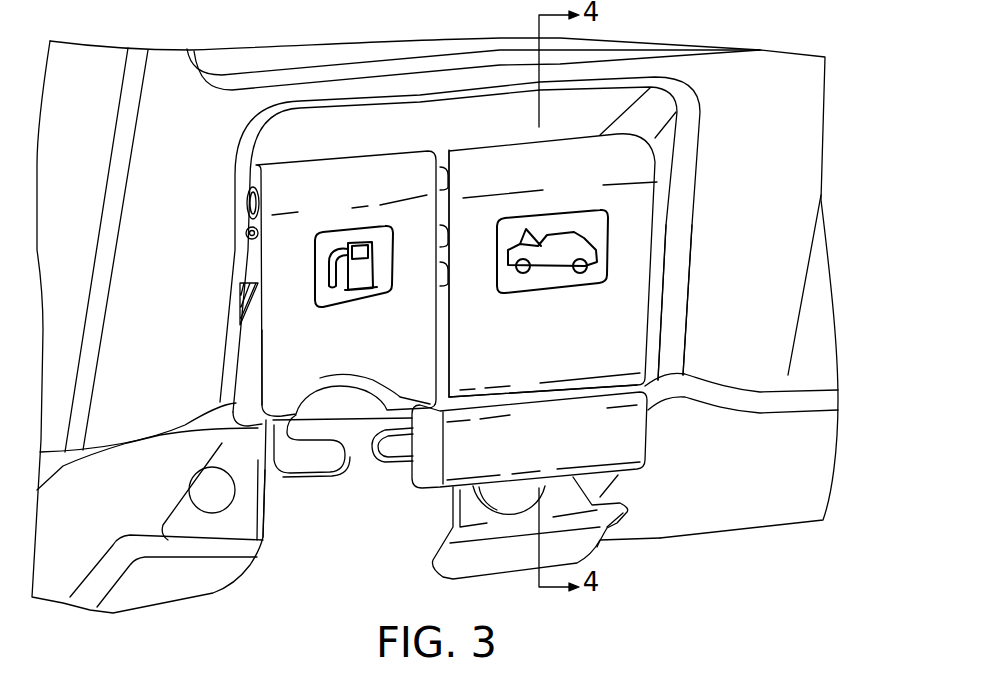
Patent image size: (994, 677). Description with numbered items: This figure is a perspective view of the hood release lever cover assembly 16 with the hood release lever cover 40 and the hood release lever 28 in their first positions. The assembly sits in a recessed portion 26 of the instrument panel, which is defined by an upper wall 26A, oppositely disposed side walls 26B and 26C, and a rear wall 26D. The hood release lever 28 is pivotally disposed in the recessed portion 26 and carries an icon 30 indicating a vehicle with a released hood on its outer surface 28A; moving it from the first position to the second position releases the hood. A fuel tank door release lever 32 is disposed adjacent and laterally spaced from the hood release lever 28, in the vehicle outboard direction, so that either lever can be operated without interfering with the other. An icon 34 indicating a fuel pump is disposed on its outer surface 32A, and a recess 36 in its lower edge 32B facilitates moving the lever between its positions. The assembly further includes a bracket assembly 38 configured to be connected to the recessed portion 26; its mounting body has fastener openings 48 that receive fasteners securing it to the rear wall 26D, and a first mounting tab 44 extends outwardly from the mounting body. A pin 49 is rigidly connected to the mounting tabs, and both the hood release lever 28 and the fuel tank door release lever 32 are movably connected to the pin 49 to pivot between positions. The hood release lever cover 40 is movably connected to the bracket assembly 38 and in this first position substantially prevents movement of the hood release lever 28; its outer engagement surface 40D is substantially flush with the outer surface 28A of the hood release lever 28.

The hood release lever cover assembly 16 is at (718, 157).
The recessed portion 26 is at (353, 98).
The upper wall 26A is at (476, 97).
The side wall 26B is at (240, 293).
The side wall 26C is at (666, 236).
The rear wall 26D is at (387, 125).
The hood release lever 28 is at (567, 160).
The outer surface 28A is at (612, 329).
The icon 30 is at (548, 294).
The fuel tank door release lever 32 is at (322, 182).
The outer surface 32A is at (291, 348).
The lower edge 32B is at (233, 469).
The icon 34 is at (314, 275).
The recess 36 is at (348, 390).
The bracket assembly 38 is at (176, 542).
The hood release lever cover 40 is at (652, 457).
The outer surface 40D is at (592, 437).
The first mounting tab 44 is at (250, 258).
The fastener opening 48 is at (230, 506).
The pin 49 is at (248, 205).